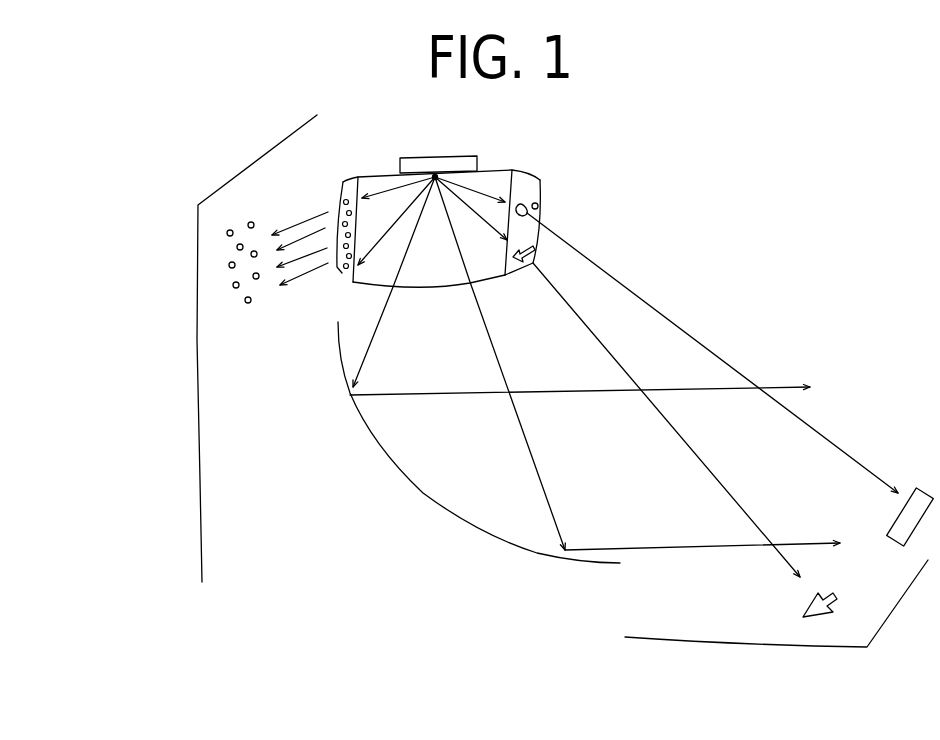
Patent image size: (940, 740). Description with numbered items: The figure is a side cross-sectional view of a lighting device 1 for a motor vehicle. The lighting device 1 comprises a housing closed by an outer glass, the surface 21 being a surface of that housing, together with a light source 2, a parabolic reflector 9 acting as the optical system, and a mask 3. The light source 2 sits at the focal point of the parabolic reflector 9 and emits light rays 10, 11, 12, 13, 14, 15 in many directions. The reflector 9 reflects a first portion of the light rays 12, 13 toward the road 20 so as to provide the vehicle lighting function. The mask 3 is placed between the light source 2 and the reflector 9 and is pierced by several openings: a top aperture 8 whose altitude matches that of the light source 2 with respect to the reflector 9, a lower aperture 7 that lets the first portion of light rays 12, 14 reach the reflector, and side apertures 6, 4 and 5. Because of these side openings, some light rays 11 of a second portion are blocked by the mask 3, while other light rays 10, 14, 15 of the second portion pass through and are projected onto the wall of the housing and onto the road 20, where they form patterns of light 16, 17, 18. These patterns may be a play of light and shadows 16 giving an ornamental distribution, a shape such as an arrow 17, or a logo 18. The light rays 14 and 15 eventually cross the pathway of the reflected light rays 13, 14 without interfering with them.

The lighting device 1 is at (708, 225).
The light source 2 is at (463, 158).
The mask 3 is at (507, 168).
The side aperture 4 is at (540, 202).
The side aperture 5 is at (533, 245).
The side aperture 6 is at (340, 272).
The lower aperture 7 is at (438, 293).
The top aperture 8 is at (396, 165).
The parabolic reflector 9 is at (390, 465).
The light ray 10 is at (398, 188).
The light ray 11 is at (396, 221).
The light ray 12 is at (580, 286).
The light ray 13 is at (637, 371).
The light ray 14 is at (617, 377).
The light ray 15 is at (666, 335).
The play of light and shadows 16 is at (245, 220).
The arrow 17 is at (820, 616).
The logo 18 is at (908, 497).
The road 20 is at (668, 628).
The surface 21 is at (207, 387).